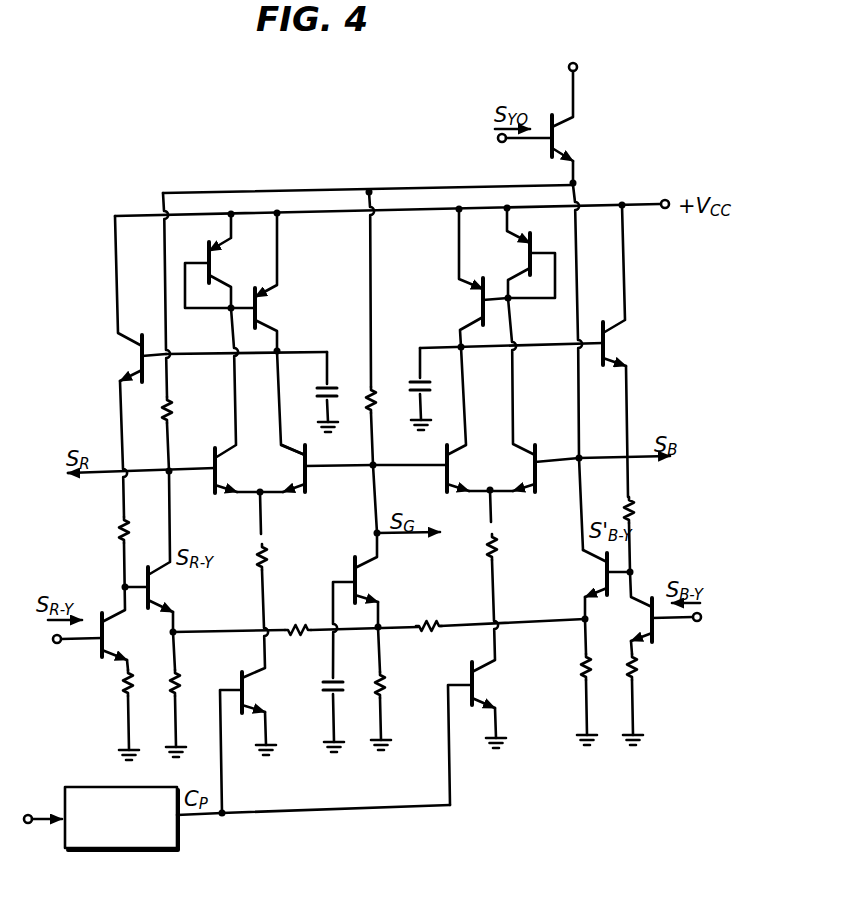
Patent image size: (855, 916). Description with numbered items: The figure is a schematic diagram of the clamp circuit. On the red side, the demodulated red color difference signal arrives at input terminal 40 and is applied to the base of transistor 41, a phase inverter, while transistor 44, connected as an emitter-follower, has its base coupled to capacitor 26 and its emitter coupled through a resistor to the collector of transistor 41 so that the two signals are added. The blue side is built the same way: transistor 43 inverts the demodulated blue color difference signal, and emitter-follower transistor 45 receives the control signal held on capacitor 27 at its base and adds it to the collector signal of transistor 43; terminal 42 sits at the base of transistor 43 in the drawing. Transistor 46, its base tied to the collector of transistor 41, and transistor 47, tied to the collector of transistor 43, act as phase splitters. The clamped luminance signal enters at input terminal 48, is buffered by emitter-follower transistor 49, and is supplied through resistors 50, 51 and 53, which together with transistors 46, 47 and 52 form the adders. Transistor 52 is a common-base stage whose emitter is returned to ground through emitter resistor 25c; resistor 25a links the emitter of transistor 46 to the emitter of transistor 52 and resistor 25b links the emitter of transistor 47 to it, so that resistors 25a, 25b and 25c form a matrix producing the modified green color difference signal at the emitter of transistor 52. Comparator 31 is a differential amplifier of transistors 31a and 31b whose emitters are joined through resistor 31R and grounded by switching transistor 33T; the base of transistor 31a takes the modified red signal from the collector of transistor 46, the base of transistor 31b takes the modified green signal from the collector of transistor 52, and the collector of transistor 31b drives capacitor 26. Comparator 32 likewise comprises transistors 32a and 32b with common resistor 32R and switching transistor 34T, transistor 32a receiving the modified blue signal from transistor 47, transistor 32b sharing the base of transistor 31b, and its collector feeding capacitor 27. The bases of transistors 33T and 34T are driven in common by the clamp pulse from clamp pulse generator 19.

The clamp pulse generator 19 is at (178, 851).
The resistor 25a is at (297, 641).
The resistor 25b is at (428, 636).
The emitter resistor 25c is at (385, 692).
The capacitor 26 is at (317, 391).
The capacitor 27 is at (411, 383).
The comparator 31 is at (283, 467).
The transistor 31a is at (215, 490).
The transistor 31b is at (308, 480).
The resistor 31R is at (268, 553).
The comparator 32 is at (476, 455).
The transistor 32a is at (540, 478).
The transistor 32b is at (445, 478).
The resistor 32R is at (500, 546).
The switching transistor 33T is at (248, 690).
The switching transistor 34T is at (478, 682).
The input terminal 40 is at (56, 644).
The transistor 41 is at (108, 620).
The B-Y input terminal 42 is at (697, 622).
The transistor 43 is at (648, 627).
The transistor 44 is at (140, 355).
The transistor 45 is at (609, 332).
The transistor 46 is at (155, 583).
The transistor 47 is at (600, 573).
The input terminal 48 is at (501, 142).
The emitter-follower transistor 49 is at (554, 131).
The resistor 50 is at (170, 412).
The resistor 51 is at (578, 401).
The transistor 52 is at (360, 572).
The resistor 53 is at (373, 421).